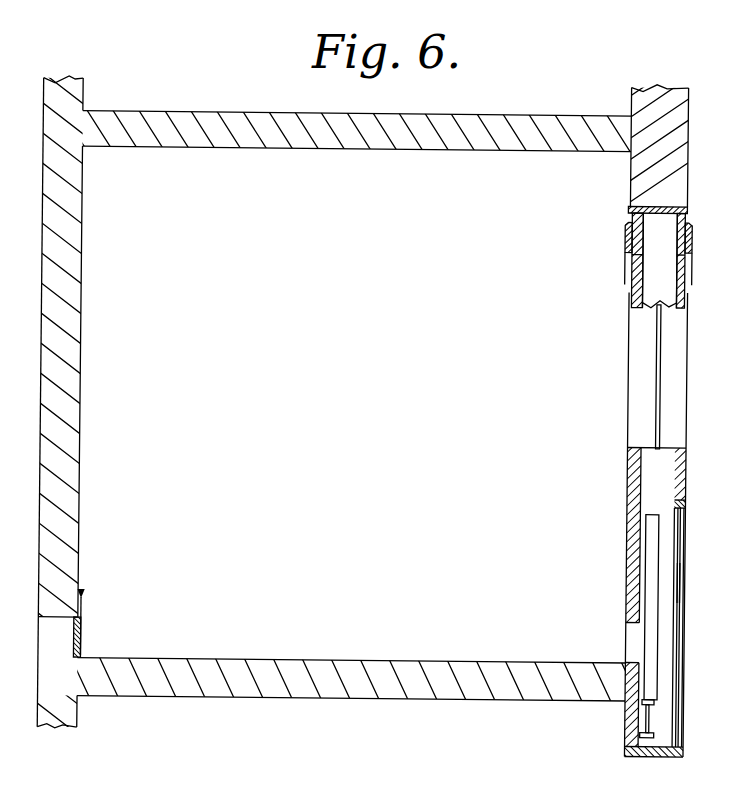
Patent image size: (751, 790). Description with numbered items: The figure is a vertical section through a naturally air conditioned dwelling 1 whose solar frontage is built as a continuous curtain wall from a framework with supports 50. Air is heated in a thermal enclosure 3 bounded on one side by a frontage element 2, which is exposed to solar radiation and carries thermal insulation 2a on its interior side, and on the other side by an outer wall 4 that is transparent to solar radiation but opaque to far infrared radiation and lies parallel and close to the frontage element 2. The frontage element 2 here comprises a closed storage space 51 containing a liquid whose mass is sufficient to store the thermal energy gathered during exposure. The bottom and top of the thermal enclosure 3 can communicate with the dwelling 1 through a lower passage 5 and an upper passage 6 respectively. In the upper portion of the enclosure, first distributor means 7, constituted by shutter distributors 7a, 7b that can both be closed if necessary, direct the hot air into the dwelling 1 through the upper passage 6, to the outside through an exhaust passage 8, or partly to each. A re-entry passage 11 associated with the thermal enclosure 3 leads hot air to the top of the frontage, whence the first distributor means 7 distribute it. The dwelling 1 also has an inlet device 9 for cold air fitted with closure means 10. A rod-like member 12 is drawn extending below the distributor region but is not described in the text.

The dwelling 1 is at (352, 454).
The frontage element 2 is at (660, 536).
The thermal insulation 2a is at (630, 571).
The thermal enclosure 3 is at (665, 618).
The outer wall 4 is at (676, 572).
The lower passage 5 is at (631, 643).
The upper passage 6 is at (636, 223).
The first distributor means 7 is at (686, 277).
The shutter distributor 7a is at (624, 245).
The shutter distributor 7b is at (691, 243).
The exhaust passage 8 is at (659, 260).
The inlet device 9 is at (57, 637).
The closure means 10 is at (86, 634).
The re-entry passage 11 is at (655, 477).
The connecting rod 12 is at (656, 381).
The support 50 is at (648, 718).
The storage space 51 is at (650, 538).